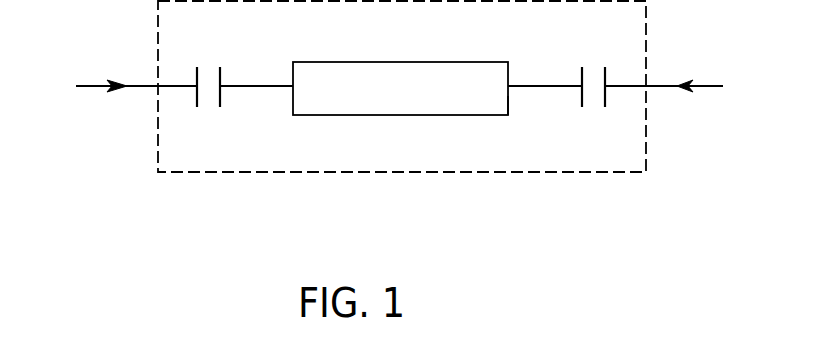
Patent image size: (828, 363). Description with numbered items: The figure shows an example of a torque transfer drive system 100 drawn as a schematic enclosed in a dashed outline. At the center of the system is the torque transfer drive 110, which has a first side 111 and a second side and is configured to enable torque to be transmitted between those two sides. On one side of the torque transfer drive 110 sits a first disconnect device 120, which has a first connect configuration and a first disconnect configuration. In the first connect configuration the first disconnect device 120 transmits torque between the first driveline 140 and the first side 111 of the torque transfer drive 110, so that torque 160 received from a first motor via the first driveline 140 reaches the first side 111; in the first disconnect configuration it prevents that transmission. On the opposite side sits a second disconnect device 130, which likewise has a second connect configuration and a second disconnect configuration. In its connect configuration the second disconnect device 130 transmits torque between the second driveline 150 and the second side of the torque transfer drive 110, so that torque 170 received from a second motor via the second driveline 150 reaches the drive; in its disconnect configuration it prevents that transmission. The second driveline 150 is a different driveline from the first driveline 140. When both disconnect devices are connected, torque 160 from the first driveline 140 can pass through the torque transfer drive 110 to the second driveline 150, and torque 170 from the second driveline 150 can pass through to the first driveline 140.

The torque transfer drive system 100 is at (402, 172).
The torque transfer drive 110 is at (402, 62).
The first side 111 is at (508, 105).
The first disconnect device 120 is at (593, 67).
The second disconnect device 130 is at (208, 66).
The first driveline 140 is at (663, 88).
The second driveline 150 is at (140, 88).
The torque 160 is at (698, 82).
The torque 170 is at (103, 82).